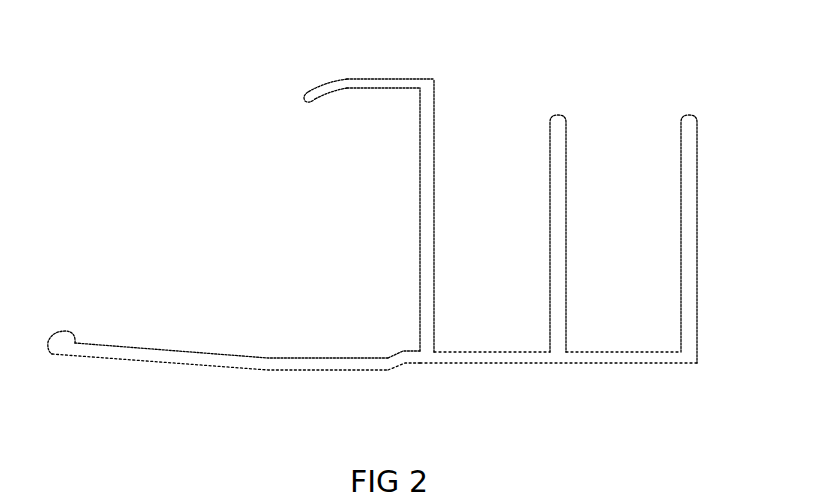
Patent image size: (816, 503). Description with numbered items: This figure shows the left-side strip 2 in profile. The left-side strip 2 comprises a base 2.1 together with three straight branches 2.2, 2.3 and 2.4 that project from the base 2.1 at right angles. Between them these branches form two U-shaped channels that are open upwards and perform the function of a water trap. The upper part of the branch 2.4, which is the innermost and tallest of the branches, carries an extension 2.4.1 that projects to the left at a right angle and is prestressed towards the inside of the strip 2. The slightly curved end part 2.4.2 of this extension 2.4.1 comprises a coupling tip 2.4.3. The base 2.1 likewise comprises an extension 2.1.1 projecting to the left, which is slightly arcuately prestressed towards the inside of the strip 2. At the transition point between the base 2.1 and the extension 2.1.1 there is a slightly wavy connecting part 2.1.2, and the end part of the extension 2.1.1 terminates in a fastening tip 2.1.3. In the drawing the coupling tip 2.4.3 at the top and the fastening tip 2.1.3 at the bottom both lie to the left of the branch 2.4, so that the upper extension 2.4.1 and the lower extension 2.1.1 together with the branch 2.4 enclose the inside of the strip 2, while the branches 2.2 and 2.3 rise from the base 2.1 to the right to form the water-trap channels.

The left-side strip 2 is at (172, 163).
The base 2.1 is at (560, 364).
The extension 2.1.1 is at (172, 371).
The connecting part 2.1.2 is at (400, 366).
The fastening tip 2.1.3 is at (68, 332).
The straight branch 2.2 is at (688, 114).
The straight branch 2.3 is at (558, 114).
The straight branch 2.4 is at (420, 203).
The extension 2.4.1 is at (372, 79).
The end part 2.4.2 is at (312, 86).
The coupling tip 2.4.3 is at (302, 100).